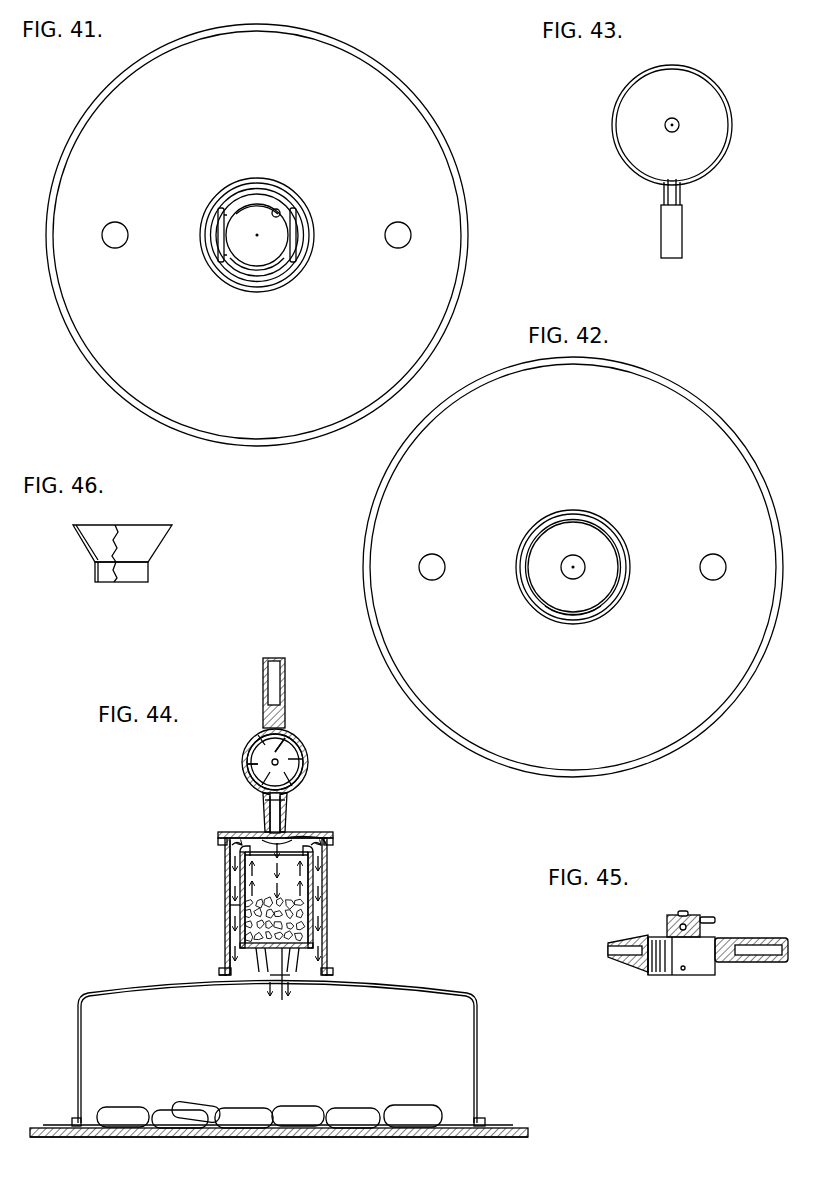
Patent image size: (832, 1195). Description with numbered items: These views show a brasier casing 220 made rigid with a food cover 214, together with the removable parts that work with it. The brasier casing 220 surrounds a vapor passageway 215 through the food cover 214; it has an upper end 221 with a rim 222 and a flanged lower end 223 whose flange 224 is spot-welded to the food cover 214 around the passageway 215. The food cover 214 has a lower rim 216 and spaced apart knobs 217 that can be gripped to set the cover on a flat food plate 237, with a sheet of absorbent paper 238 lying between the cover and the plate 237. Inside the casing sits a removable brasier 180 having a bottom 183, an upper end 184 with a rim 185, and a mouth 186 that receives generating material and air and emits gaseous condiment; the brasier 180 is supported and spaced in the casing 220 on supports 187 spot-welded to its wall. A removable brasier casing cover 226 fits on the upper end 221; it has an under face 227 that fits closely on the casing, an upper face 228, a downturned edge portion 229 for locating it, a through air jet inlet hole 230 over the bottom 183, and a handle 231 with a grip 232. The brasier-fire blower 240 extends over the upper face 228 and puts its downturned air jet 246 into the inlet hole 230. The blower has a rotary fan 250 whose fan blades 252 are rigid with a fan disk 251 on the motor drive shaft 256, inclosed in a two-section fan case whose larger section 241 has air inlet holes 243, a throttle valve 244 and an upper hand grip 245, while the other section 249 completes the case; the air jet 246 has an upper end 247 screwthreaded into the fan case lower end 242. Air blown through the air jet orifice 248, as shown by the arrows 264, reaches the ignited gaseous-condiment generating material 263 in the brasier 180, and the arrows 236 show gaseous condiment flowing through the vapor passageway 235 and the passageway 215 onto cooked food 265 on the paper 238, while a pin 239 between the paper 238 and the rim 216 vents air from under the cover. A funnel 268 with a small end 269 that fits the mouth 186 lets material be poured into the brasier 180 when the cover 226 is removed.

In FIG. 41, the brasier 180 is at (247, 270).
In FIG. 44, the brasier 180 is at (315, 908).
In FIG. 41, the bottom 183 is at (247, 218).
In FIG. 44, the bottom 183 is at (284, 980).
In FIG. 41, the upper end 184 is at (220, 237).
In FIG. 44, the upper end 184 is at (318, 864).
In FIG. 41, the rim 185 is at (257, 272).
In FIG. 44, the rim 185 is at (228, 855).
In FIG. 41, the mouth 186 is at (279, 211).
In FIG. 41, the supports 187 is at (226, 268).
In FIG. 44, the supports 187 is at (254, 963).
In FIG. 41, the food cover 214 is at (115, 108).
In FIG. 42, the food cover 214 is at (653, 398).
In FIG. 44, the food cover 214 is at (97, 990).
In FIG. 42, the vapor passageway 215 is at (565, 563).
In FIG. 44, the vapor passageway 215 is at (274, 984).
In FIG. 41, the lower rim 216 is at (334, 34).
In FIG. 42, the lower rim 216 is at (364, 554).
In FIG. 44, the lower rim 216 is at (488, 1114).
In FIG. 41, the knobs 217 is at (113, 223).
In FIG. 42, the knobs 217 is at (432, 580).
In FIG. 41, the brasier casing 220 is at (257, 183).
In FIG. 42, the brasier casing 220 is at (610, 533).
In FIG. 44, the brasier casing 220 is at (330, 935).
In FIG. 41, the upper end 221 is at (207, 222).
In FIG. 42, the upper end 221 is at (532, 600).
In FIG. 44, the upper end 221 is at (325, 850).
In FIG. 41, the rim 222 is at (309, 251).
In FIG. 42, the rim 222 is at (577, 622).
In FIG. 44, the rim 222 is at (222, 842).
In FIG. 44, the flanged lower end 223 is at (333, 967).
In FIG. 41, the flange 224 is at (298, 277).
In FIG. 42, the flange 224 is at (625, 598).
In FIG. 44, the flange 224 is at (223, 970).
In FIG. 43, the brasier casing cover 226 is at (678, 66).
In FIG. 44, the brasier casing cover 226 is at (330, 825).
In FIG. 43, the under face 227 is at (710, 102).
In FIG. 44, the upper face 228 is at (298, 836).
In FIG. 43, the downturned edge portion 229 is at (620, 156).
In FIG. 44, the downturned edge portion 229 is at (332, 843).
In FIG. 43, the air jet inlet hole 230 is at (665, 123).
In FIG. 44, the air jet inlet hole 230 is at (282, 862).
In FIG. 43, the handle 231 is at (681, 203).
In FIG. 43, the grip 232 is at (683, 245).
In FIG. 44, the vapor passageway 235 is at (235, 910).
In FIG. 44, the arrows 236 is at (315, 892).
In FIG. 44, the food plate 237 is at (348, 1138).
In FIG. 44, the sheet of absorbent paper 238 is at (512, 1129).
In FIG. 44, the pin 239 is at (483, 1126).
In FIG. 44, the brasier-fire blower 240 is at (295, 732).
In FIG. 44, the larger section of fan case 241 is at (241, 777).
In FIG. 45, the larger section of fan case 241 is at (705, 978).
In FIG. 44, the fan case lower end 242 is at (290, 800).
In FIG. 45, the fan case lower end 242 is at (638, 968).
In FIG. 45, the air inlet holes 243 is at (665, 927).
In FIG. 45, the throttle valve 244 is at (697, 913).
In FIG. 44, the upper hand grip 245 is at (287, 675).
In FIG. 45, the upper hand grip 245 is at (768, 962).
In FIG. 44, the air jet 246 is at (260, 818).
In FIG. 45, the air jet 246 is at (618, 962).
In FIG. 44, the upper end 247 is at (257, 793).
In FIG. 45, the upper end 247 is at (660, 955).
In FIG. 44, the air jet orifice 248 is at (258, 826).
In FIG. 45, the air jet orifice 248 is at (608, 950).
In FIG. 44, the fan case section 249 is at (246, 748).
In FIG. 44, the rotary fan 250 is at (265, 730).
In FIG. 44, the fan disk 251 is at (293, 765).
In FIG. 44, the fan blades 252 is at (297, 742).
In FIG. 44, the motor drive shaft 256 is at (247, 760).
In FIG. 44, the gaseous-condiment generating material 263 is at (253, 897).
In FIG. 44, the arrows 264 is at (305, 835).
In FIG. 44, the cooked food 265 is at (330, 1105).
In FIG. 46, the funnel 268 is at (155, 525).
In FIG. 46, the small end 269 is at (150, 575).